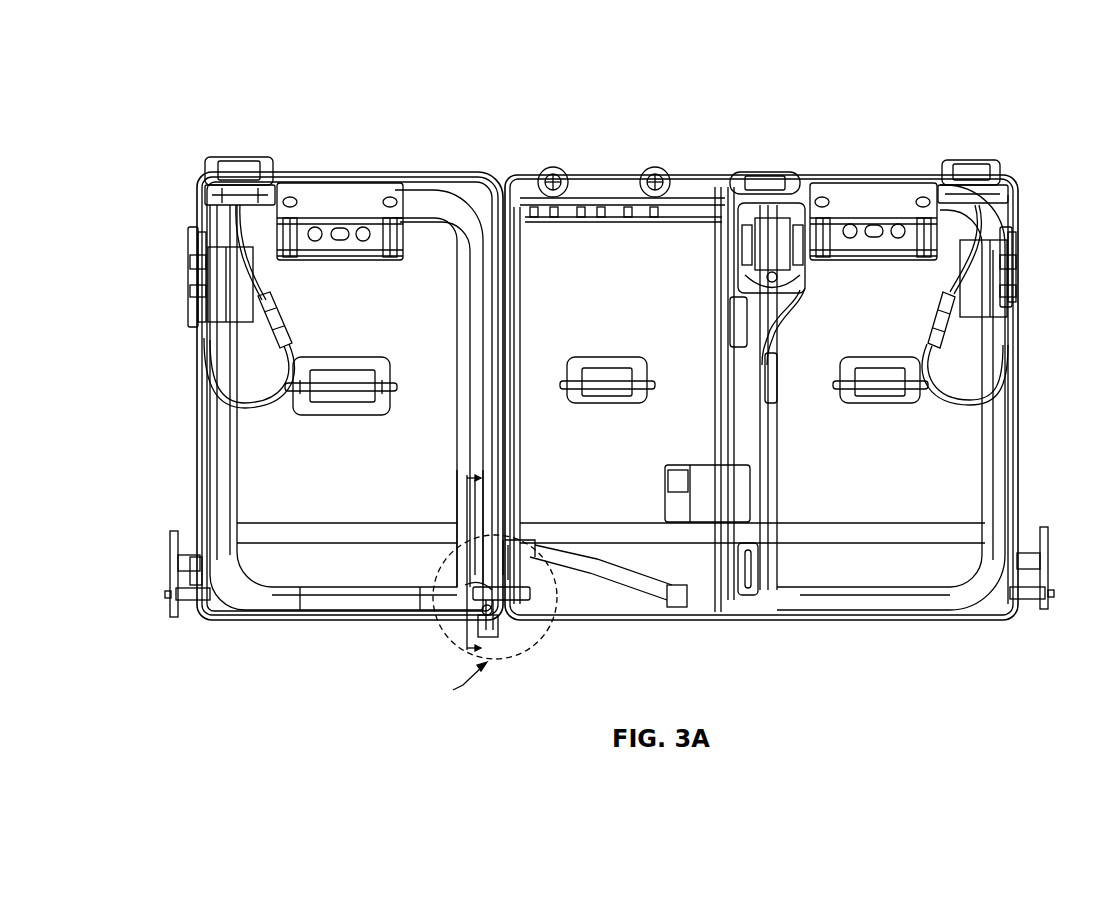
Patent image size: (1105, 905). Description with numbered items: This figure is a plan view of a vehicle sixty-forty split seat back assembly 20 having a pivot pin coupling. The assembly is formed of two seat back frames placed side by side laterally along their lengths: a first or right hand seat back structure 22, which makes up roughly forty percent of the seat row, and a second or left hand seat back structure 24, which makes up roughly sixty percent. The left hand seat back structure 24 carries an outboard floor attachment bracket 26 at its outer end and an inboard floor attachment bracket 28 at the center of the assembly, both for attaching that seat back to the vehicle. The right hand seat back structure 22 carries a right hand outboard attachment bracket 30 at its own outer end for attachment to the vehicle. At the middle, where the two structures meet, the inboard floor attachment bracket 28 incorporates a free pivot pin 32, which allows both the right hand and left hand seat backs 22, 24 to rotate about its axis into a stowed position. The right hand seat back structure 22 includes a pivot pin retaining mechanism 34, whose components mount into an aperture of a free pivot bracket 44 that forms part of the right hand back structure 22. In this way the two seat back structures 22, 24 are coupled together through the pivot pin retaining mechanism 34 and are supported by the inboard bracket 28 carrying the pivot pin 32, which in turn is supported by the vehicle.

The split seat back assembly 20 is at (180, 101).
The right hand seat back structure 22 is at (389, 171).
The left hand seat back structure 24 is at (800, 168).
The outboard floor attachment bracket 26 is at (1047, 556).
The inboard floor attachment bracket 28 is at (500, 628).
The right hand outboard attachment bracket 30 is at (178, 559).
The free pivot pin 32 is at (562, 620).
The pivot pin retaining mechanism 34 is at (486, 605).
The free pivot bracket 44 is at (478, 566).